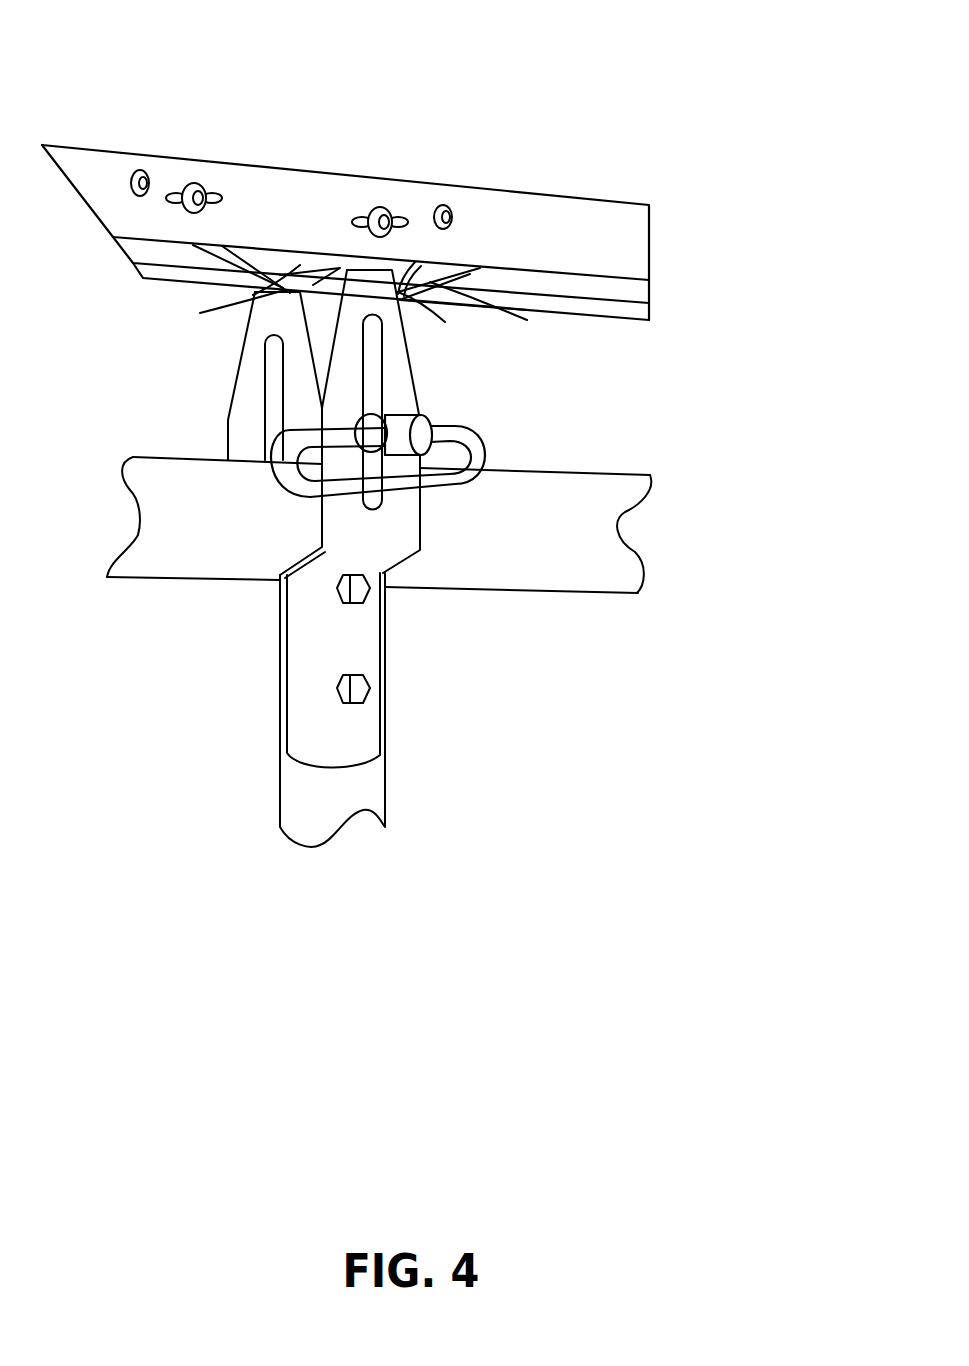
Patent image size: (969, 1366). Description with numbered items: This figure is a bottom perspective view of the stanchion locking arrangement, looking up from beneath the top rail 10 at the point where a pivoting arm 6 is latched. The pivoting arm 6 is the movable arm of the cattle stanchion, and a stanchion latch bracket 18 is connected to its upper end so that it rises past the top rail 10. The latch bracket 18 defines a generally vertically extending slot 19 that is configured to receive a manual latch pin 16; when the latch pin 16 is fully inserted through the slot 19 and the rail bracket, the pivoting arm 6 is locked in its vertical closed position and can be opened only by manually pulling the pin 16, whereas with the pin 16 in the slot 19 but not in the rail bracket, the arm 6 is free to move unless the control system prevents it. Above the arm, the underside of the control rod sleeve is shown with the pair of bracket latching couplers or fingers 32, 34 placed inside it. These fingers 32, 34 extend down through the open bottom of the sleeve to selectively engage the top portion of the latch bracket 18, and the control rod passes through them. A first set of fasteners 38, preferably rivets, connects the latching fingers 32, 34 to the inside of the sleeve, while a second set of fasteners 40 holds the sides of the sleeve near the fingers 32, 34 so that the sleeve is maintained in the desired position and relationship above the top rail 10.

The pivoting arm 6 is at (298, 812).
The top rail 10 is at (163, 535).
The manual latch pin 16 is at (483, 433).
The stanchion latch bracket 18 is at (407, 510).
The slot 19 is at (367, 349).
The bracket latching coupler 32 is at (253, 295).
The bracket latching coupler 34 is at (237, 263).
The first set of fasteners 38 is at (217, 195).
The second set of fasteners 40 is at (146, 178).